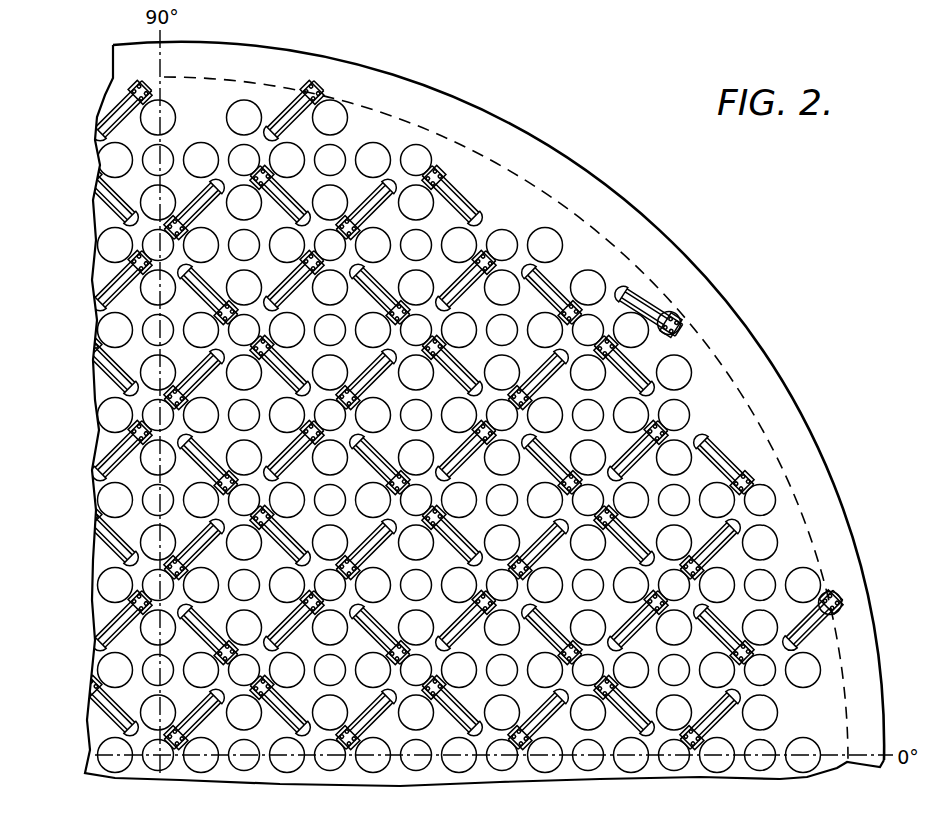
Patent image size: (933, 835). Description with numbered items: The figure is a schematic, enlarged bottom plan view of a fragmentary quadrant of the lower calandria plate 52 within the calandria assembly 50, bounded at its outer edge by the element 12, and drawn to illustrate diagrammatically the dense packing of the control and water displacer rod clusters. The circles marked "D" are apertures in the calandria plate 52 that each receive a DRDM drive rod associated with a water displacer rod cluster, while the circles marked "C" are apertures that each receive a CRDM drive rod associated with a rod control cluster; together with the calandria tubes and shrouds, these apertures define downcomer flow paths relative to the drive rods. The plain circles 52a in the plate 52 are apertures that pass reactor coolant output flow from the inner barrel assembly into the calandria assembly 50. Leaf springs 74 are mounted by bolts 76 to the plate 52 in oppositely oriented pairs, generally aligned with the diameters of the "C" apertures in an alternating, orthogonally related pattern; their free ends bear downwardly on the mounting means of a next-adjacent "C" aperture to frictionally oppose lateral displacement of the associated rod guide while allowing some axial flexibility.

The column shell wall 12 is at (713, 284).
The calandria assembly 50 is at (540, 130).
The lower calandria plate 52 is at (711, 423).
The apertures 52a is at (562, 239).
The leaf springs 74 is at (646, 524).
The bolts 76 is at (743, 473).